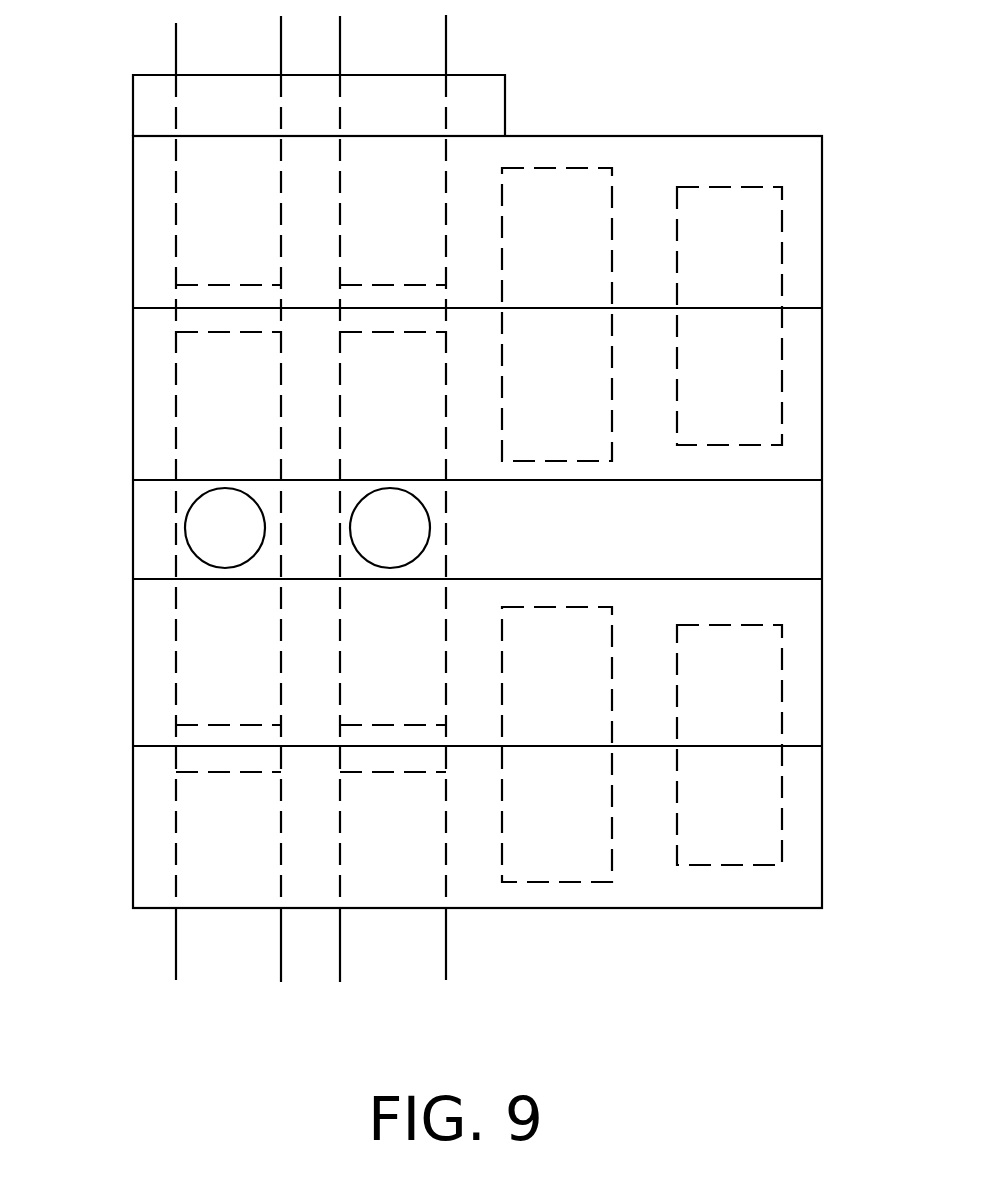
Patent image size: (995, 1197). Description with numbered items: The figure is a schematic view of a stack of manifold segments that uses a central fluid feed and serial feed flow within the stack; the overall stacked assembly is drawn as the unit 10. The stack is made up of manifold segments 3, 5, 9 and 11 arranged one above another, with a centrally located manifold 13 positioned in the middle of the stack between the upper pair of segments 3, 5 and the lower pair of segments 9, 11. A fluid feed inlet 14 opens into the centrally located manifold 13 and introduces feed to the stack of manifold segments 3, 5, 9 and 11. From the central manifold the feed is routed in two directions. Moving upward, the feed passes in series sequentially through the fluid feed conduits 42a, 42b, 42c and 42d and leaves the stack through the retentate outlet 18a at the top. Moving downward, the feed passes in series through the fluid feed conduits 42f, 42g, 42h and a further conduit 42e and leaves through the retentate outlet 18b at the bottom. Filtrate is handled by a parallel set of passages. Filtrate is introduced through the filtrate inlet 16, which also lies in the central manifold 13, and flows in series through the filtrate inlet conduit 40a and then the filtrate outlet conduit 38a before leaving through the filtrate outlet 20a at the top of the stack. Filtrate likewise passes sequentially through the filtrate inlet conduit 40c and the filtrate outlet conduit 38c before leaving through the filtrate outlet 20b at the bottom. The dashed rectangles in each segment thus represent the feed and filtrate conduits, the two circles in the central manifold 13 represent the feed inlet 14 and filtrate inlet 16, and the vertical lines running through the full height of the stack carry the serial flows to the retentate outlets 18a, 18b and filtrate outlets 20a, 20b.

The circuit board 10 is at (133, 108).
The manifold segment 3 is at (822, 257).
The manifold segment 5 is at (822, 427).
The centrally located manifold 13 is at (822, 545).
The manifold segment 9 is at (822, 675).
The manifold segment 11 is at (822, 815).
The fluid feed inlet 14 is at (185, 518).
The filtrate inlet 16 is at (430, 530).
The retentate outlet 18a is at (176, 46).
The retentate outlet 18b is at (176, 952).
The filtrate outlet 20a is at (446, 53).
The filtrate outlet 20b is at (446, 958).
The filtrate outlet conduit 38a is at (502, 400).
The filtrate outlet conduit 38c is at (502, 810).
The filtrate inlet conduit 40a is at (446, 183).
The filtrate inlet conduit 40c is at (340, 672).
The fluid feed conduit 42a is at (176, 422).
The fluid feed conduit 42b is at (677, 400).
The fluid feed conduit 42c is at (677, 233).
The fluid feed conduit 42d is at (176, 220).
The pad region 42e is at (176, 836).
The fluid feed conduit 42f is at (176, 632).
The fluid feed conduit 42g is at (677, 668).
The fluid feed conduit 42h is at (677, 828).